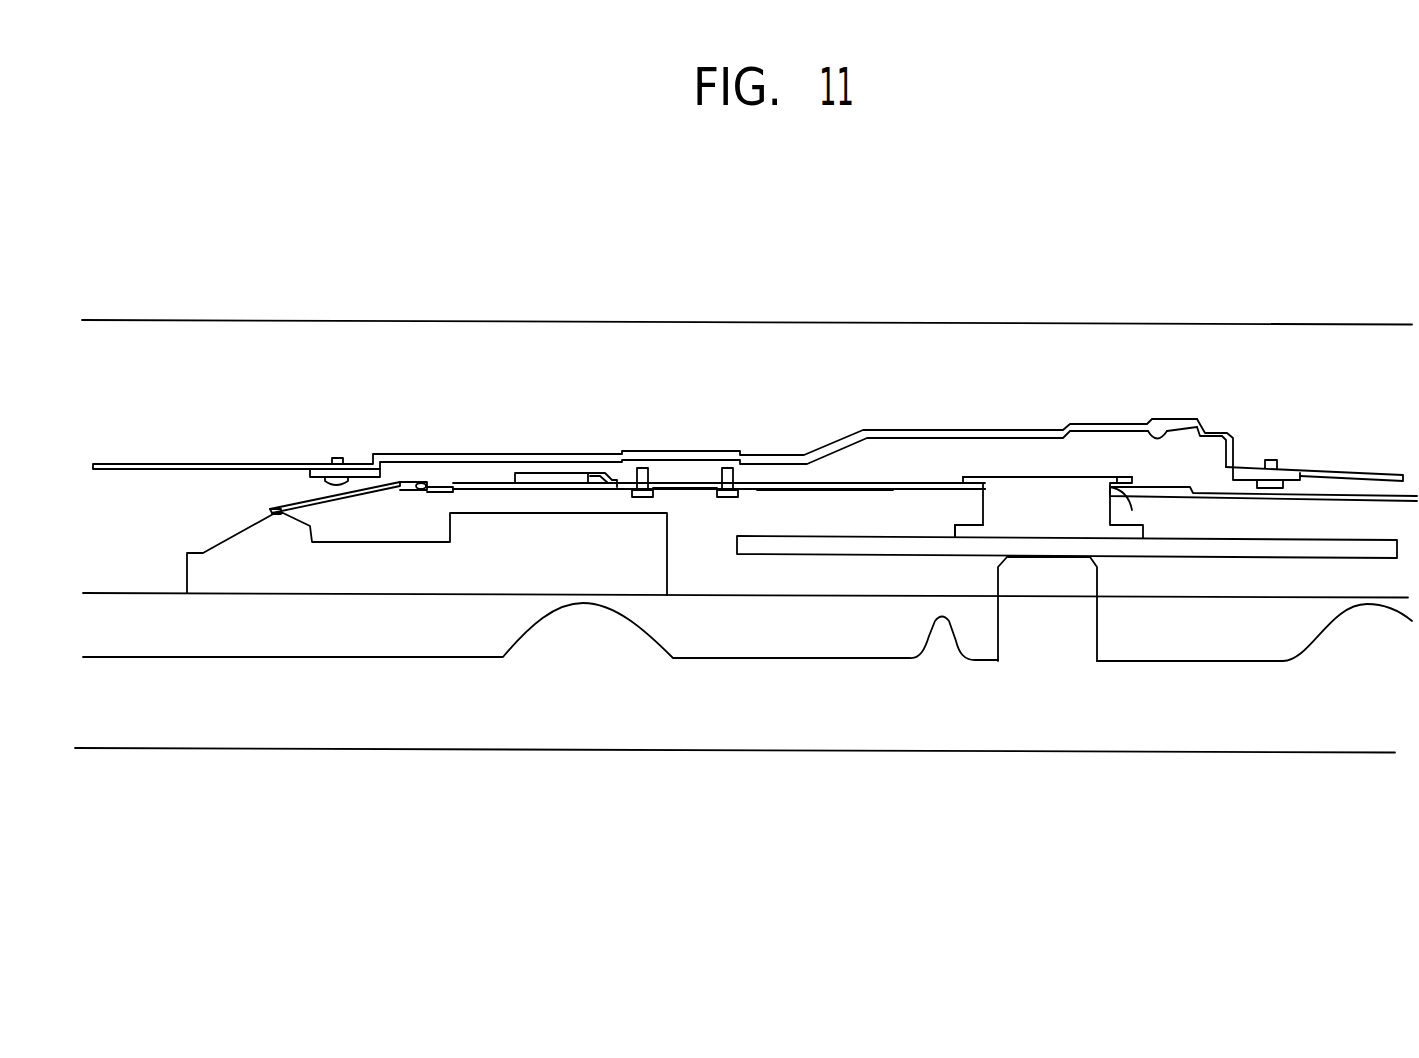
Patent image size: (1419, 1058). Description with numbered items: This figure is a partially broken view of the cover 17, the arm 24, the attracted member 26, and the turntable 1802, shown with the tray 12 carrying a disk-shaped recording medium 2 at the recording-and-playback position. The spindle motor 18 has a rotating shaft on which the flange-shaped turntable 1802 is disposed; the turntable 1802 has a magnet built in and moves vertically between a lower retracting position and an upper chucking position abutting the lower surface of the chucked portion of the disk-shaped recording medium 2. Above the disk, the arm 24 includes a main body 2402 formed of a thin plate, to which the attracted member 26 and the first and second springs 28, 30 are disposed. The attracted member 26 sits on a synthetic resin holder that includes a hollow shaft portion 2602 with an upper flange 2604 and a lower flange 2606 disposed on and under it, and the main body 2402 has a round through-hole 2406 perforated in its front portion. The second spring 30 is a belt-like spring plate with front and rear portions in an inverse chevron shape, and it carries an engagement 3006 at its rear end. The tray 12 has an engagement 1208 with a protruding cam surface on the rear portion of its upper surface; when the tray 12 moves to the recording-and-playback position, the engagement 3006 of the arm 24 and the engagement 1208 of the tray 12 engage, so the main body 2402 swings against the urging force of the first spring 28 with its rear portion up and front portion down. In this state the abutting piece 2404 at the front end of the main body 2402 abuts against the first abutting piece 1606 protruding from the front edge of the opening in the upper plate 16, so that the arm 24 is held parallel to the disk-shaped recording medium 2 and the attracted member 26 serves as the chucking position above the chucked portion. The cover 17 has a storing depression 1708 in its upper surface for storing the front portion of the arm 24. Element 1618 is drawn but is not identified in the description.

The disk-shaped recording medium 2 is at (752, 568).
The tray 12 is at (535, 502).
The upper plate 16 is at (1367, 478).
The cover 17 is at (126, 452).
The spindle motor 18 is at (998, 633).
The arm 24 is at (866, 465).
The attracted member 26 is at (1015, 458).
The first spring 28 is at (789, 502).
The second spring 30 is at (378, 510).
The engagement 1208 is at (243, 530).
The first abutting piece 1606 is at (1173, 497).
The connector assembly 1618 is at (677, 481).
The storing depression 1708 is at (1190, 490).
The turntable 1802 is at (1065, 550).
The main body 2402 is at (902, 482).
The abutting piece 2404 is at (1190, 478).
The round through-hole 2406 is at (1030, 480).
The shaft portion 2602 is at (1145, 498).
The upper flange 2604 is at (1000, 481).
The lower flange 2606 is at (957, 527).
The engagement 3006 is at (282, 515).